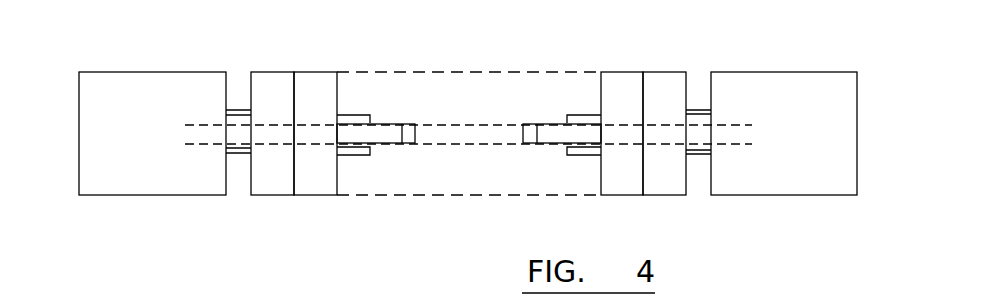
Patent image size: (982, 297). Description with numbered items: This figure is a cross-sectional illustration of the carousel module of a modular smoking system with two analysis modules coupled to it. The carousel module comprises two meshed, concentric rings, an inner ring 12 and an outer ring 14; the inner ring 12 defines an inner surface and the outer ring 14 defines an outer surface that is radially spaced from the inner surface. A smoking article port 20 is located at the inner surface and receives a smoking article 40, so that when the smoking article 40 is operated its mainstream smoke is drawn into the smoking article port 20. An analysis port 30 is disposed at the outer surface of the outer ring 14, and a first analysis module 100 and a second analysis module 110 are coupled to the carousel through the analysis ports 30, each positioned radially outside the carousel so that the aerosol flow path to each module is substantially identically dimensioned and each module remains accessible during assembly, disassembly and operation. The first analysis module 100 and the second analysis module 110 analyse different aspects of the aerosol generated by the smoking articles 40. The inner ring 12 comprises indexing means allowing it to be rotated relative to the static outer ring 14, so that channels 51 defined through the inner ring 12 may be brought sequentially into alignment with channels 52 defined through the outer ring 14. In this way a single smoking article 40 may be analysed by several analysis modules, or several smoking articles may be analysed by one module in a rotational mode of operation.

The first analysis module 100 is at (152, 90).
The second analysis module 110 is at (780, 90).
The inner ring 12 is at (312, 90).
The outer ring 14 is at (268, 84).
The smoking article port 20 is at (347, 115).
The analysis port 30 is at (236, 147).
The smoking article 40 is at (390, 118).
The channel 51 is at (270, 130).
The channel 52 is at (318, 128).